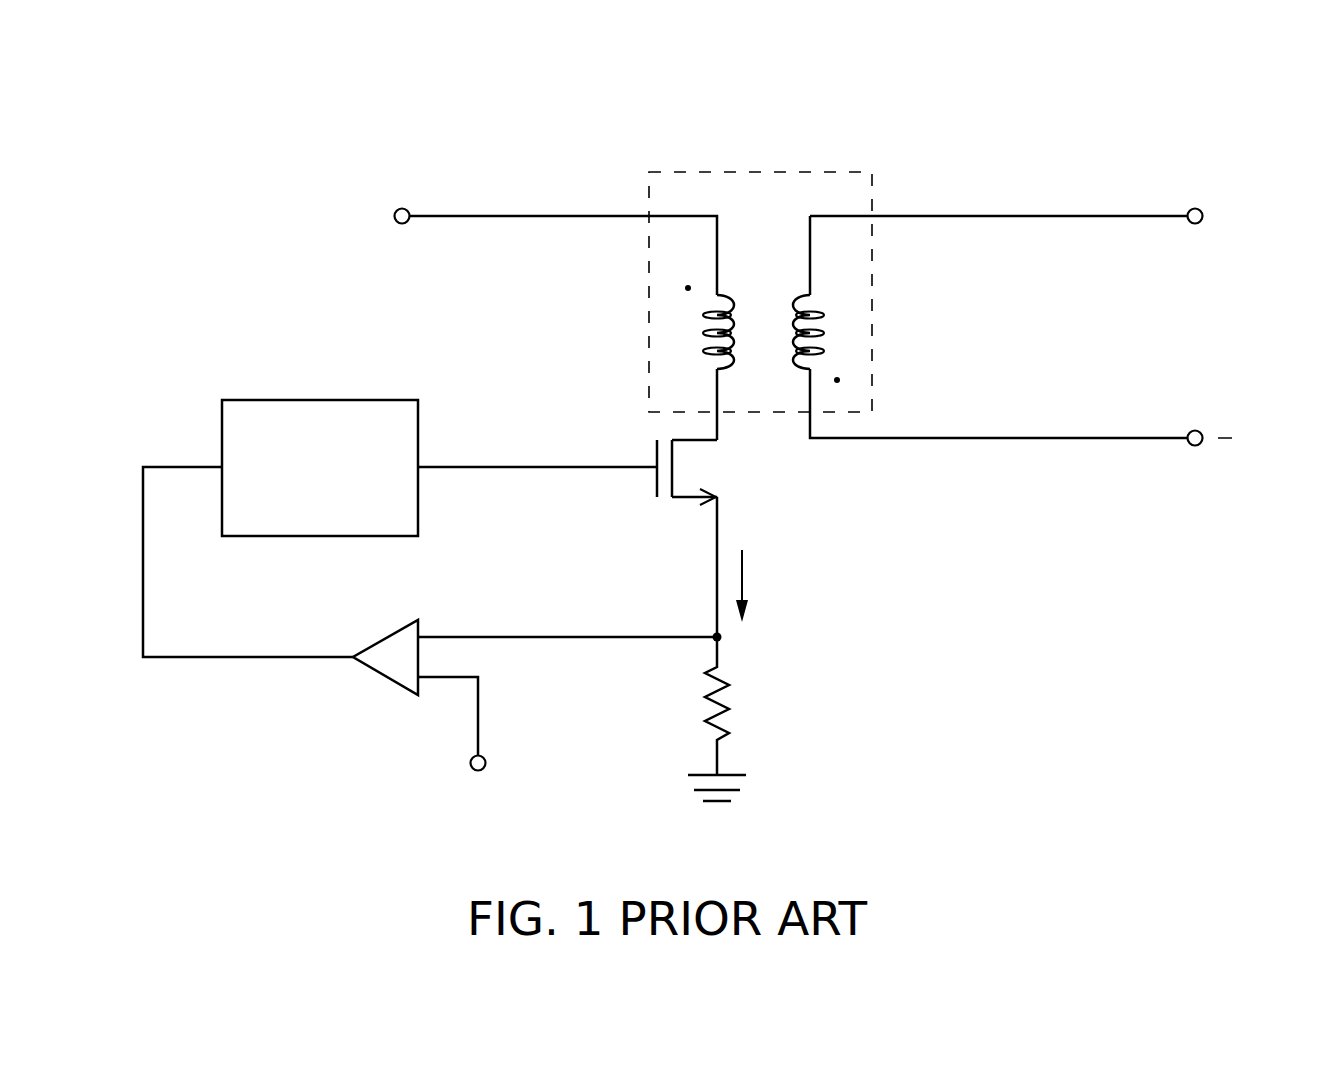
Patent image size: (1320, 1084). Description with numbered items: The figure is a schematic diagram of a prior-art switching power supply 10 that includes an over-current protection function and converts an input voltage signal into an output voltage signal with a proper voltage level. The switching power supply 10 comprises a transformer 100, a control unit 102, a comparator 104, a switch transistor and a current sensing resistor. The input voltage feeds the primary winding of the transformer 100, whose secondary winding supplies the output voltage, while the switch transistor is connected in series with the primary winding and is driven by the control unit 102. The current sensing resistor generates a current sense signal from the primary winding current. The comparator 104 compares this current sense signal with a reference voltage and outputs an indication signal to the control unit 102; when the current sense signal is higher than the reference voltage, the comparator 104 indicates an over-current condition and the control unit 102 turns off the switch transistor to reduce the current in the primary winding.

The switching power supply 10 is at (1160, 110).
The transformer 100 is at (832, 172).
The control unit 102 is at (250, 400).
The comparator 104 is at (400, 622).